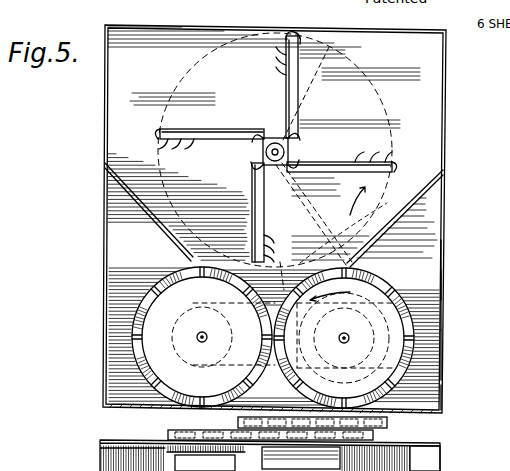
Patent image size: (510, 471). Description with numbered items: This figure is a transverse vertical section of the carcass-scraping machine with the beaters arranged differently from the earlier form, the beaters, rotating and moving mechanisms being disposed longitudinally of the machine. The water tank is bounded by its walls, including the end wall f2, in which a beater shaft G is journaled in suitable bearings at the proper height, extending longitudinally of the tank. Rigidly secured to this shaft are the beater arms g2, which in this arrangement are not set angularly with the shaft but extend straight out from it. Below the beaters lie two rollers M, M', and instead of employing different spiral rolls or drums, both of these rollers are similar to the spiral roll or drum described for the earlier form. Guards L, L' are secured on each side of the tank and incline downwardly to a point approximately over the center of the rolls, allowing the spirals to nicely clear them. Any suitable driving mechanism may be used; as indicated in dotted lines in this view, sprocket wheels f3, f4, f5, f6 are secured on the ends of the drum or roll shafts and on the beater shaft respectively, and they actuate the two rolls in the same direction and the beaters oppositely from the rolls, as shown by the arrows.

The beater shaft G is at (290, 143).
The sprocket wheel f6 is at (302, 125).
The beater arms g2 is at (212, 141).
The guard L' is at (120, 212).
The guard L is at (410, 218).
The roller M' is at (203, 337).
The roller M is at (373, 338).
The sprocket wheel f5 is at (447, 268).
The sprocket wheel f4 is at (420, 288).
The sprocket wheel f3 is at (168, 428).
The end wall f2 is at (427, 447).